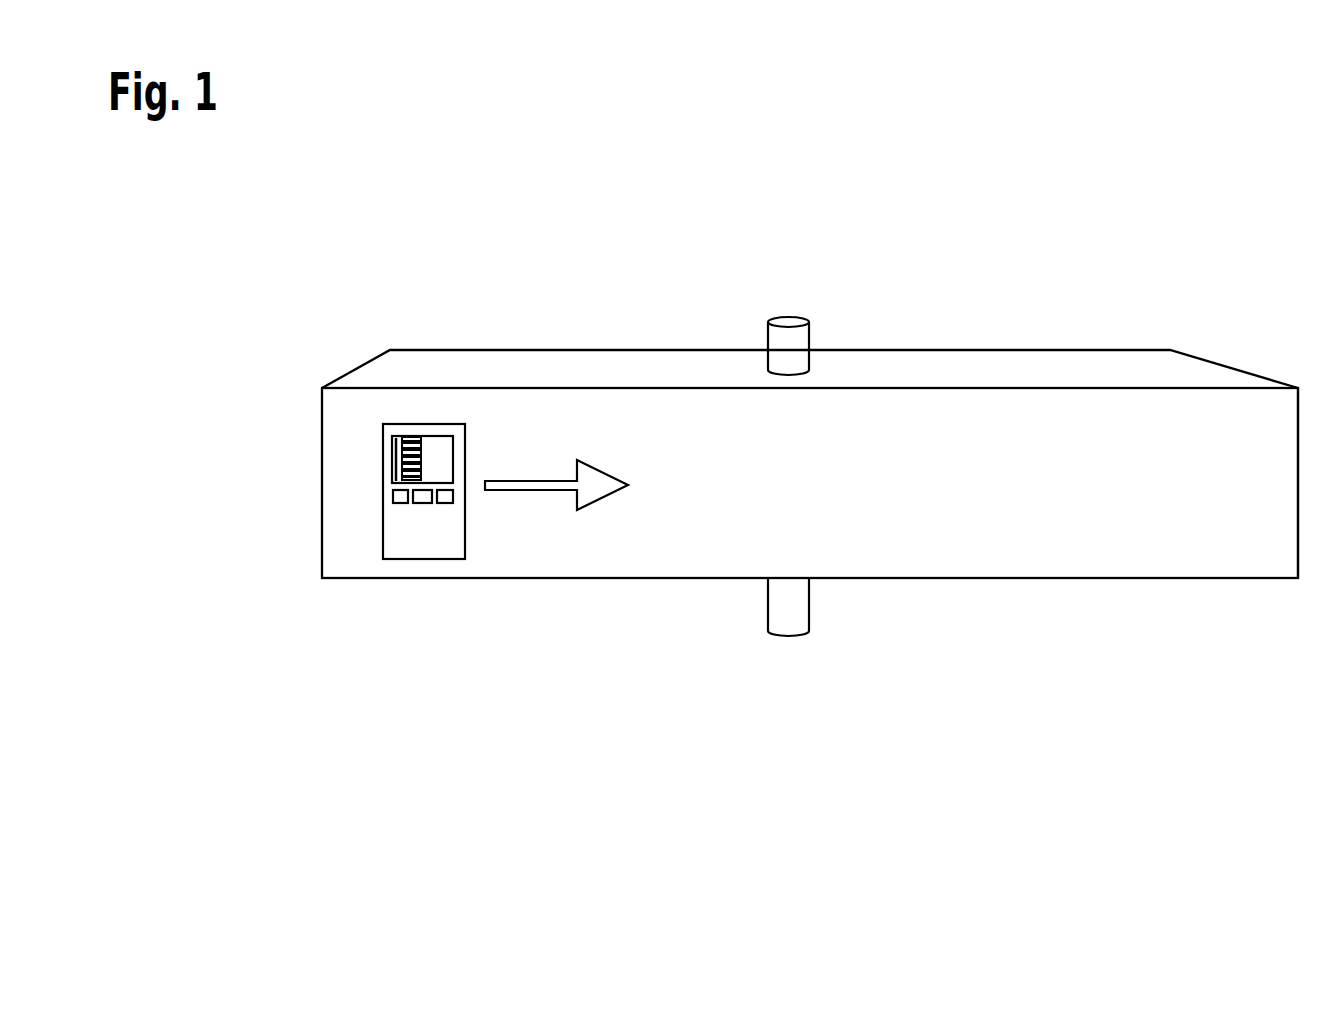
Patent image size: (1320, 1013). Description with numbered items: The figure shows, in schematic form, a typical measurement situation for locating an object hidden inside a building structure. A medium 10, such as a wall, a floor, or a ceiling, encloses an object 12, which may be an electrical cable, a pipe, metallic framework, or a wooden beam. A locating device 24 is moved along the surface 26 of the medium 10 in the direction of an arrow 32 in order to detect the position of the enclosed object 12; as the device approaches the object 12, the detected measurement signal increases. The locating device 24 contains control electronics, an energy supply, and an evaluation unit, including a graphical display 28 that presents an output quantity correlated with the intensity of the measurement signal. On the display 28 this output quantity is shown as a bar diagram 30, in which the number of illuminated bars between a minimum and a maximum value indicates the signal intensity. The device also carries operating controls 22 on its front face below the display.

The medium 10 is at (1080, 414).
The object 12 is at (780, 340).
The operating buttons 22 is at (392, 498).
The locating device 24 is at (402, 549).
The surface 26 is at (1248, 552).
The graphical display 28 is at (443, 447).
The bar diagram 30 is at (396, 447).
The arrow 32 is at (592, 477).